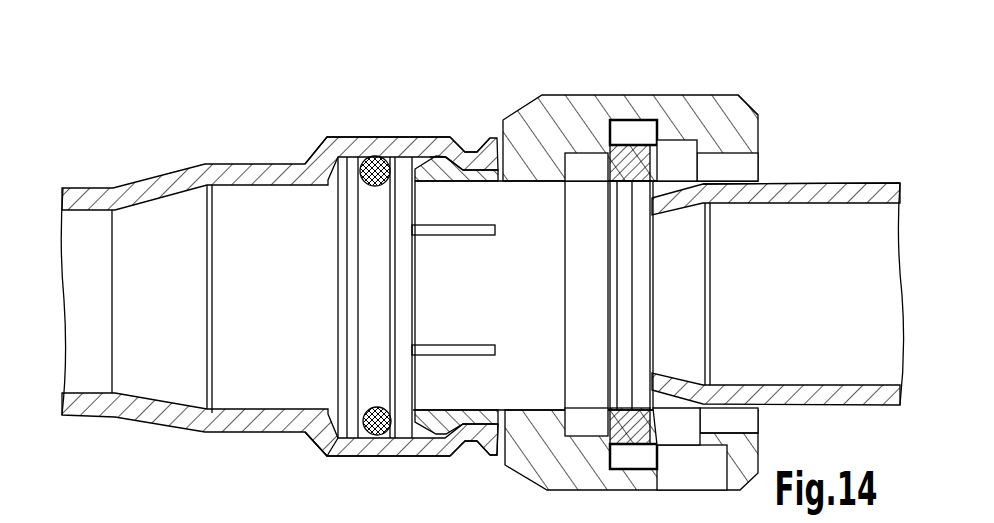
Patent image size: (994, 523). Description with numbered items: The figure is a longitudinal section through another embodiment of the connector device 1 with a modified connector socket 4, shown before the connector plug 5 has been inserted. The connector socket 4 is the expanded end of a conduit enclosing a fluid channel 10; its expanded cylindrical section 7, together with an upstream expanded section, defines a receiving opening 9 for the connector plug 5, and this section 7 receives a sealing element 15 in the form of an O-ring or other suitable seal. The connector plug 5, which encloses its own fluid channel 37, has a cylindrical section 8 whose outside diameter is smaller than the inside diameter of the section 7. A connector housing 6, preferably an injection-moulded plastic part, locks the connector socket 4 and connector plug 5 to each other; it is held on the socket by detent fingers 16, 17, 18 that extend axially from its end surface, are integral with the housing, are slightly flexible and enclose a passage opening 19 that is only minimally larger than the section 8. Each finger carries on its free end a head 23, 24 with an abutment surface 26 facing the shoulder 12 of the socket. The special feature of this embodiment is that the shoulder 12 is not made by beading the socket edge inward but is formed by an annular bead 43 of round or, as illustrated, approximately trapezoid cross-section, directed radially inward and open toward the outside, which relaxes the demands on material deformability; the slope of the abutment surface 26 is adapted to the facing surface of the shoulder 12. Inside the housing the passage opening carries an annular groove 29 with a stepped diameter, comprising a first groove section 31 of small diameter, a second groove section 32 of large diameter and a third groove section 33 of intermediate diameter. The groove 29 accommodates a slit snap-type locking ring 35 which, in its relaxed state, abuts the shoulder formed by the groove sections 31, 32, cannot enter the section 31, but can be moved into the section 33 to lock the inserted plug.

The connector device 1 is at (790, 92).
The connector socket 4 is at (213, 162).
The connector plug 5 is at (833, 155).
The connector housing 6 is at (527, 127).
The cylindrical section 7 is at (350, 135).
The cylindrical section 8 is at (833, 193).
The receiving opening 9 is at (275, 321).
The fluid channel 10 is at (105, 327).
The shoulder 12 is at (467, 437).
The sealing element 15 is at (345, 453).
The detent finger 16 is at (435, 158).
The detent finger 17 is at (468, 313).
The detent finger 18 is at (470, 413).
The passage opening 19 is at (539, 288).
The head 23 is at (412, 152).
The head 24 is at (432, 432).
The abutment surface 26 is at (437, 150).
The annular groove 29 is at (618, 468).
The first groove section 31 is at (577, 152).
The second groove section 32 is at (632, 118).
The third groove section 33 is at (680, 138).
The locking ring 35 is at (700, 424).
The fluid channel 37 is at (885, 329).
The annular bead 43 is at (472, 132).